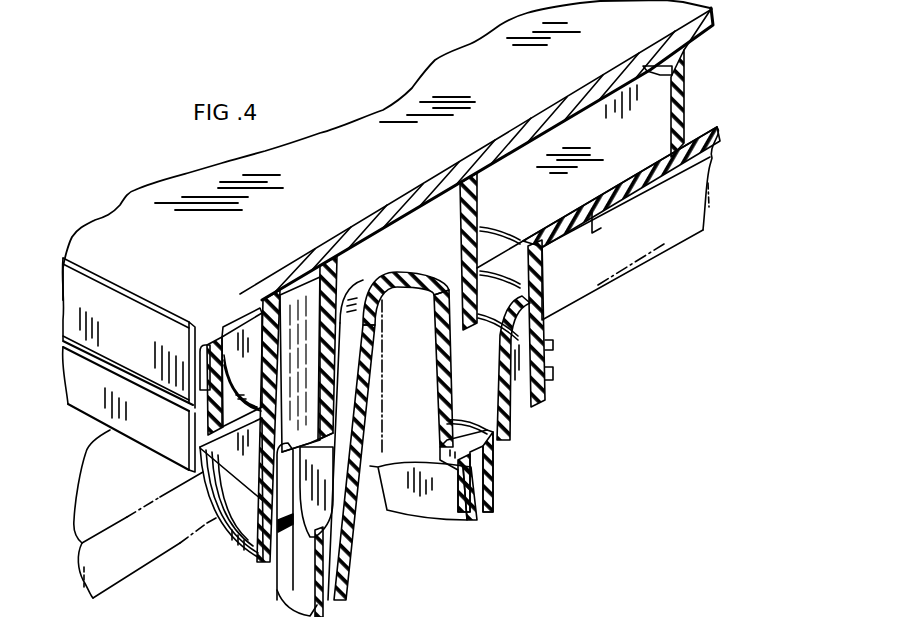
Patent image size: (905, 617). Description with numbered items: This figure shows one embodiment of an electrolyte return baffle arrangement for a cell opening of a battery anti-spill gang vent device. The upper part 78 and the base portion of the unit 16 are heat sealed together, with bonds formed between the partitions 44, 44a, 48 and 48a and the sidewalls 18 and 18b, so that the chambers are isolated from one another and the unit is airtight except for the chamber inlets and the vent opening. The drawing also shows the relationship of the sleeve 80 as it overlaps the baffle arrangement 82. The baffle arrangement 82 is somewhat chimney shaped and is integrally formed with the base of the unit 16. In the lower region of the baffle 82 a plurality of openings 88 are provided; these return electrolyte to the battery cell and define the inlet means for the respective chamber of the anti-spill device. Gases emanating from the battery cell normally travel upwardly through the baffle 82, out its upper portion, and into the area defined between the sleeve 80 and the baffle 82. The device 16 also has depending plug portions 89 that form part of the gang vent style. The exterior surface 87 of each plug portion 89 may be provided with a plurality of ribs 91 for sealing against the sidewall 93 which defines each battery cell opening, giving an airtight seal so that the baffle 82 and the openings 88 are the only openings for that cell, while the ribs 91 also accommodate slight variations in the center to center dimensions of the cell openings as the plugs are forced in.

The unit 16 is at (724, 41).
The sidewall 18 is at (192, 428).
The sidewall 18b is at (196, 350).
The partition 44 is at (672, 100).
The partition 44a is at (673, 70).
The partition 48 is at (262, 350).
The partition 48a is at (277, 294).
The upper part 78 is at (578, 100).
The sleeve 80 is at (478, 213).
The baffle arrangement 82 is at (410, 272).
The exterior surface 87 is at (242, 515).
The openings 88 is at (495, 450).
The plug portion 89 is at (243, 545).
The ribs 91 is at (260, 563).
The sidewall 93 is at (220, 516).